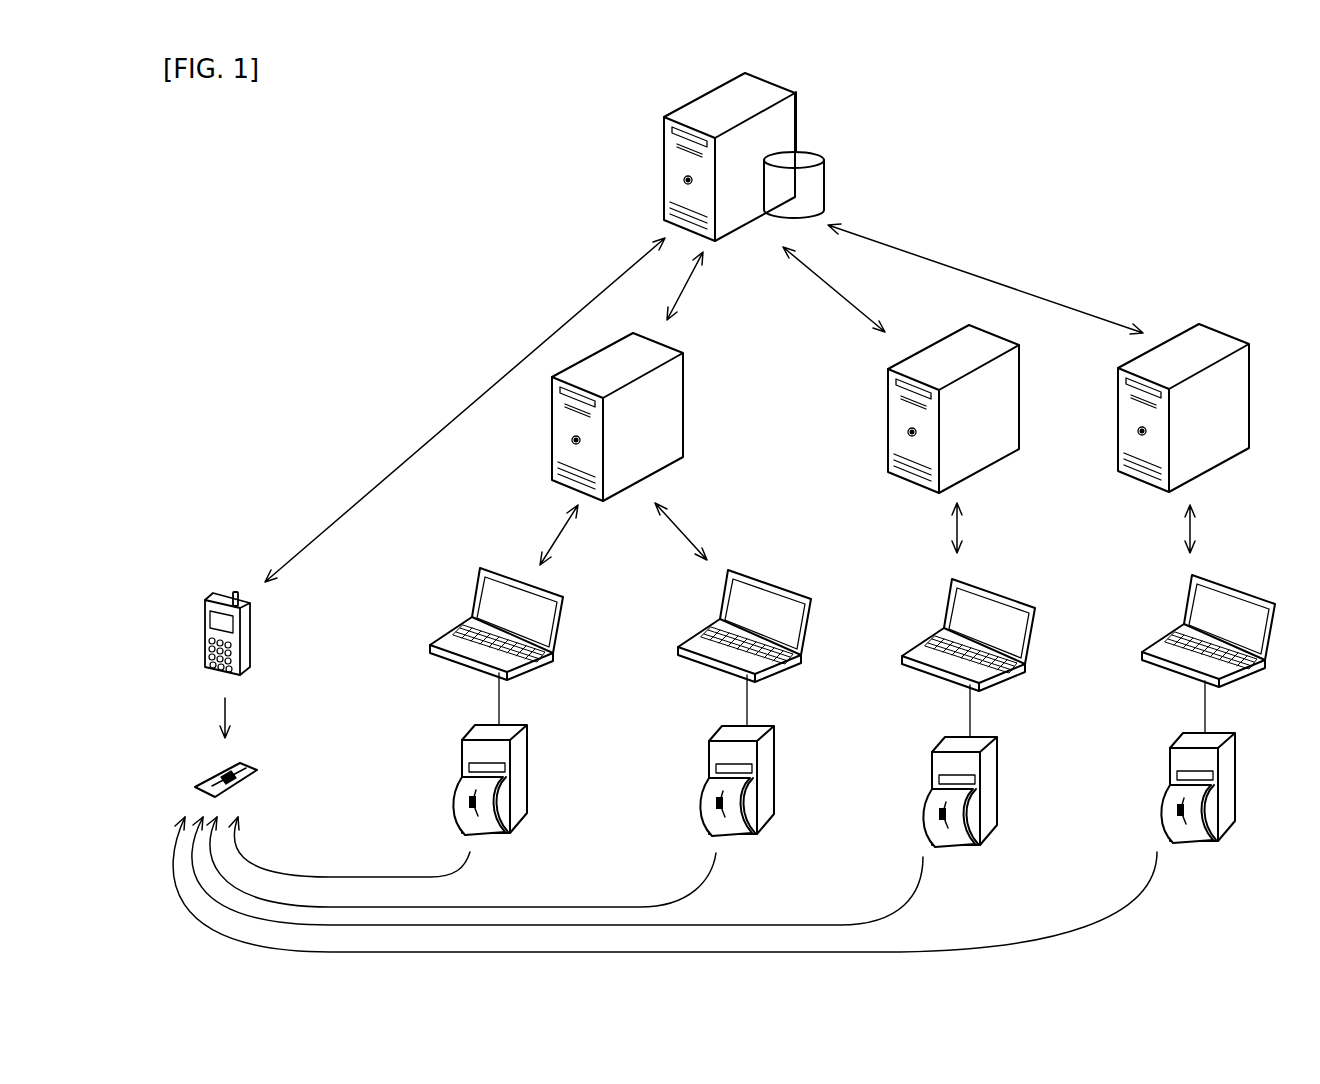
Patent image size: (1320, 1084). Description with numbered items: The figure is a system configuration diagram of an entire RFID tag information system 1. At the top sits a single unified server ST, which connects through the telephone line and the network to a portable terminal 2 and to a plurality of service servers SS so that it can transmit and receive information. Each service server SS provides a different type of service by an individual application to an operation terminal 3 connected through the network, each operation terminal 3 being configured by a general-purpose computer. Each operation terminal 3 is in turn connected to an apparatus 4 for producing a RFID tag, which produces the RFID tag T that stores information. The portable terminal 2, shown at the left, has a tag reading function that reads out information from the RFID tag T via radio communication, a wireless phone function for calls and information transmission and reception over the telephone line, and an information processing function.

The RFID tag information system 1 is at (328, 209).
The portable terminal 2 is at (217, 592).
The operation terminal 3 is at (500, 570).
The apparatus for producing a RFID tag 4 is at (517, 726).
The RFID tag T is at (257, 770).
The unified server ST is at (664, 142).
The service server SS is at (684, 420).